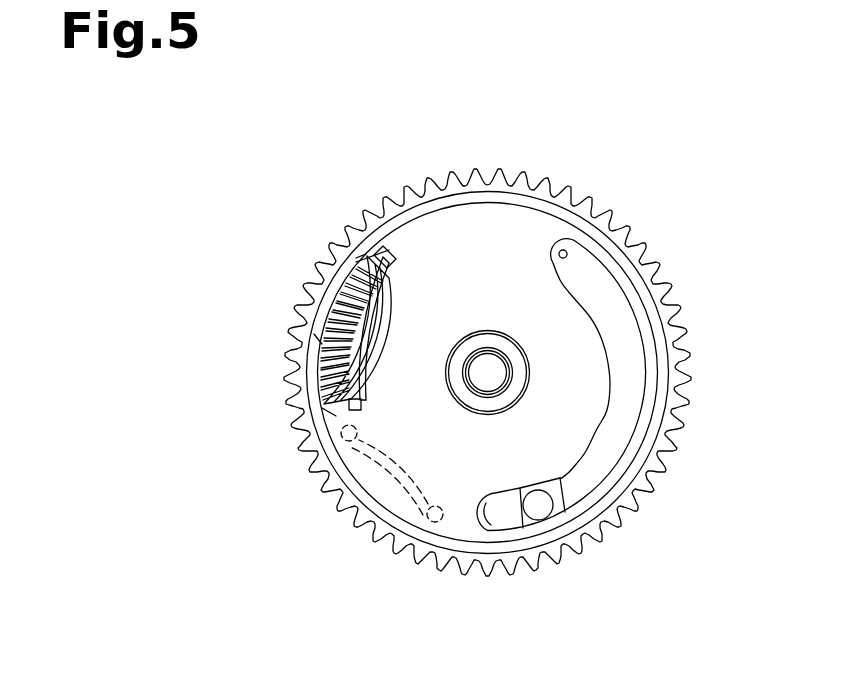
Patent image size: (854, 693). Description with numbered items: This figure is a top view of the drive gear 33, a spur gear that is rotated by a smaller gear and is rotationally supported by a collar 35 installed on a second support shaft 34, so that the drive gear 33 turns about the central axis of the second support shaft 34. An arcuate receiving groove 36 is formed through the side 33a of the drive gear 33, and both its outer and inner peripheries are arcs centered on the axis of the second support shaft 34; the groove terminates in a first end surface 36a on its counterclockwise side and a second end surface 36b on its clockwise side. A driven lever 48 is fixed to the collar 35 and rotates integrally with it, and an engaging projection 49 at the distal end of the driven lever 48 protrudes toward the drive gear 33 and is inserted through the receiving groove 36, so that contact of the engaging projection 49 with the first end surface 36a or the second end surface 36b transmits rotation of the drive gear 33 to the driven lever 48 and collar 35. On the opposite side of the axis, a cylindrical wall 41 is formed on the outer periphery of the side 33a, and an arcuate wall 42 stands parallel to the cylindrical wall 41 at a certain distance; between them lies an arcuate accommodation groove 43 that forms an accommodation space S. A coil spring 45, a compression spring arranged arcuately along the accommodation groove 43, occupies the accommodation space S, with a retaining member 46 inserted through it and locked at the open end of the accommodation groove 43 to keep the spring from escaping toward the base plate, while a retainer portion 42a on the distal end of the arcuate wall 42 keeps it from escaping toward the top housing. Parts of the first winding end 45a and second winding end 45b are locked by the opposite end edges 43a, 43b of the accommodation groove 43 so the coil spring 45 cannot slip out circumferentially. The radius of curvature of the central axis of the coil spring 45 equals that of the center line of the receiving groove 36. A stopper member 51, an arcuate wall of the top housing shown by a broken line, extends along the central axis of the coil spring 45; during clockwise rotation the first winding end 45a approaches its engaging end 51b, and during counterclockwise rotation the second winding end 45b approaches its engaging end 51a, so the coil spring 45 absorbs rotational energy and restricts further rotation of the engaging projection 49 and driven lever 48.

The drive gear 33 is at (667, 297).
The side of the drive gear 33a is at (553, 398).
The second support shaft 34 is at (479, 352).
The collar 35 is at (507, 346).
The receiving groove 36 is at (644, 385).
The first end surface 36a is at (557, 253).
The second end surface 36b is at (490, 508).
The cylindrical wall 41 is at (513, 197).
The arcuate wall 42 is at (368, 372).
The retainer portion 42a is at (370, 325).
The accommodation groove 43 is at (313, 340).
The end edge of the accommodation groove 43a is at (362, 260).
The end edge of the accommodation groove 43b is at (360, 407).
The coil spring 45 is at (330, 290).
The first winding end 45a is at (395, 264).
The second winding end 45b is at (326, 417).
The retaining member 46 is at (318, 383).
The accommodation space S is at (263, 356).
The driven lever 48 is at (572, 512).
The engaging projection 49 is at (540, 502).
The stopper member 51 is at (395, 470).
The engaging end 51a is at (348, 437).
The engaging end 51b is at (435, 522).